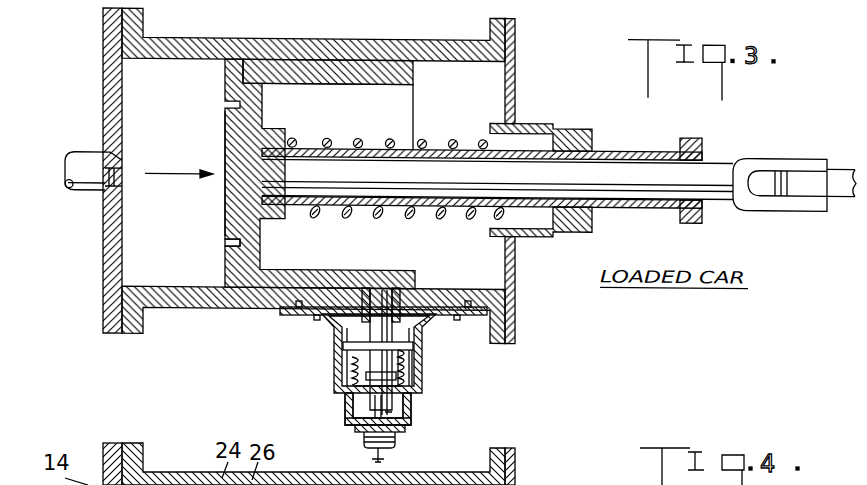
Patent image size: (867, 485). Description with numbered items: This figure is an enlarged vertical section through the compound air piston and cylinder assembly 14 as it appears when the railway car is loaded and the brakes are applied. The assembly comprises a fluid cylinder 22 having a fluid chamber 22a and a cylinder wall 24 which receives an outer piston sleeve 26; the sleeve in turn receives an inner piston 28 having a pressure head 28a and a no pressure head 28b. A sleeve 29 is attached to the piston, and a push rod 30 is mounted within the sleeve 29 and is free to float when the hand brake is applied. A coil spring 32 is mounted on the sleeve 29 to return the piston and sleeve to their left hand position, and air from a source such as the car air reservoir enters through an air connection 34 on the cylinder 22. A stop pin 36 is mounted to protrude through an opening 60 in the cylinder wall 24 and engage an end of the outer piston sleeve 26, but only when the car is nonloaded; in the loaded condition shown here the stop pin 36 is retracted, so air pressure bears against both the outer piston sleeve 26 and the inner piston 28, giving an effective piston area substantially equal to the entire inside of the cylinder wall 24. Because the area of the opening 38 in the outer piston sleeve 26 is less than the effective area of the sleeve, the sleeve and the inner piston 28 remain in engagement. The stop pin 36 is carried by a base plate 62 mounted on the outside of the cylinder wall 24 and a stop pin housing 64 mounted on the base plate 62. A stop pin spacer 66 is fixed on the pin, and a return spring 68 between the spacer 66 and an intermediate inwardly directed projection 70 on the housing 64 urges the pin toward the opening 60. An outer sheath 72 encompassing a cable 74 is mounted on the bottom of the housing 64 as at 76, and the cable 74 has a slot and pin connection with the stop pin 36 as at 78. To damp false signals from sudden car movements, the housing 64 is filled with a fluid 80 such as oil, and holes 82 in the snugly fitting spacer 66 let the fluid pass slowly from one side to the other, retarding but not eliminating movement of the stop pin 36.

The compound air piston and cylinder assembly 14 is at (274, 175).
The fluid cylinder 22 is at (106, 297).
The fluid chamber 22a is at (135, 88).
The cylinder wall 24 is at (228, 46).
The outer piston sleeve 26 is at (360, 68).
The inner piston 28 is at (286, 173).
The pressure head 28a is at (225, 138).
The no pressure head 28b is at (268, 103).
The sleeve 29 is at (633, 145).
The push rod 30 is at (710, 167).
The coil spring 32 is at (410, 209).
The air connection 34 is at (75, 195).
The stop pin 36 is at (402, 334).
The opening 38 is at (224, 240).
The opening 60 is at (384, 292).
The base plate 62 is at (283, 311).
The stop pin housing 64 is at (334, 368).
The stop pin spacer 66 is at (423, 352).
The return spring 68 is at (415, 380).
The intermediate inwardly directed projection 70 is at (370, 393).
The outer sheath 72 is at (396, 451).
The cable 74 is at (375, 457).
The sheath mounting 76 is at (400, 432).
The slot and pin connection 78 is at (372, 398).
The fluid 80 is at (350, 378).
The holes 82 is at (353, 341).